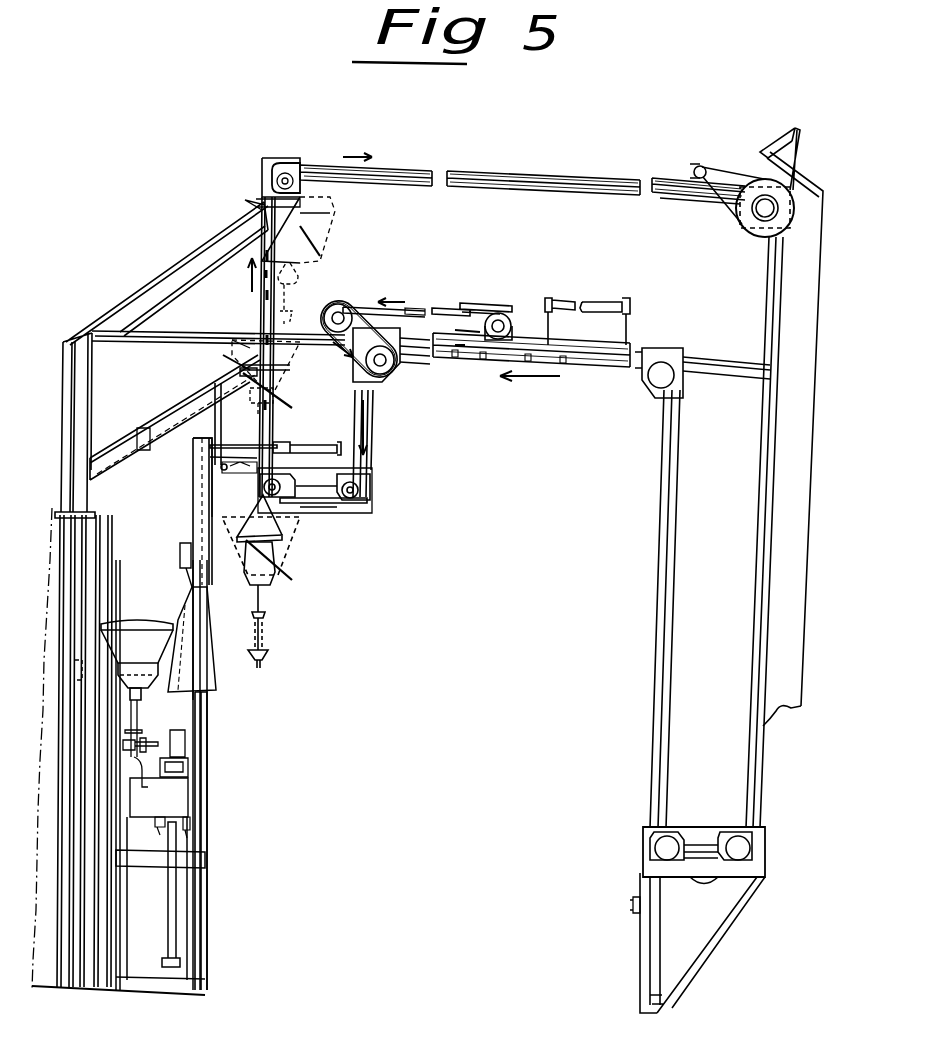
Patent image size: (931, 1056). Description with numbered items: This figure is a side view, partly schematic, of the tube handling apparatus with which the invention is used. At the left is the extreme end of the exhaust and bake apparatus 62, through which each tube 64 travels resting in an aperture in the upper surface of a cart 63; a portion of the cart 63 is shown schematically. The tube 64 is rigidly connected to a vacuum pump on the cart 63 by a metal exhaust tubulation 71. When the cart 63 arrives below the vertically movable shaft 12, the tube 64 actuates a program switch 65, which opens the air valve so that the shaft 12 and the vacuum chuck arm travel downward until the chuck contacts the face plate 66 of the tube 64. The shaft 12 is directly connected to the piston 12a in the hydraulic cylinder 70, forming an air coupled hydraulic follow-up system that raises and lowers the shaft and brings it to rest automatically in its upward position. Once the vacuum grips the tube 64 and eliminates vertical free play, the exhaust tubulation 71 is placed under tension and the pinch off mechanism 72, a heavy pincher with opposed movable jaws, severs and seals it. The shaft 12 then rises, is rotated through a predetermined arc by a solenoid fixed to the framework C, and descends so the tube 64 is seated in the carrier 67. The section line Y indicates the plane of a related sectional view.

The vertically movable shaft 12 is at (193, 526).
The piston 12a is at (180, 714).
The exhaust and bake apparatus 62 is at (55, 1005).
The cart 63 is at (115, 665).
The tube 64 is at (152, 652).
The program switch 65 is at (88, 665).
The face plate 66 is at (150, 628).
The carrier 67 is at (275, 538).
The hydraulic cylinder 70 is at (175, 840).
The metal exhaust tubulation 71 is at (134, 762).
The pinch off mechanism 72 is at (152, 742).
The framework C is at (219, 779).
The section line Y- Y is at (335, 485).